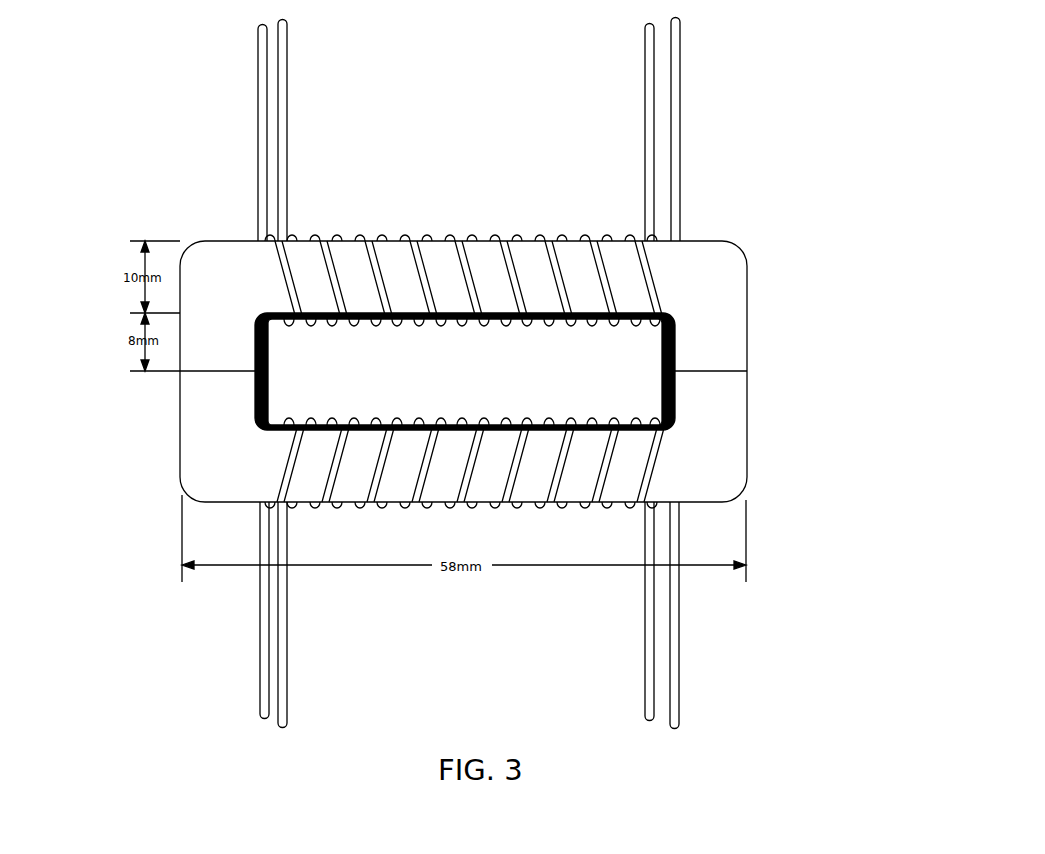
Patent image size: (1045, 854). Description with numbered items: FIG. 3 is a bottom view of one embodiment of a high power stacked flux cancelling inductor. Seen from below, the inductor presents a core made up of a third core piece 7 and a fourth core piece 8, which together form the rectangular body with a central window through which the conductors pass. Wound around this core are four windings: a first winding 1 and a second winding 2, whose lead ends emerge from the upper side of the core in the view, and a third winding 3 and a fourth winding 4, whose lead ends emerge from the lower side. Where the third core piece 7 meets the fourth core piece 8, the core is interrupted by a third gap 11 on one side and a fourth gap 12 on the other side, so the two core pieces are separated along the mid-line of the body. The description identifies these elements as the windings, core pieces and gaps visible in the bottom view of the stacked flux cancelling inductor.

The first winding 1 is at (257, 192).
The second winding 2 is at (290, 177).
The third winding 3 is at (258, 672).
The fourth winding 4 is at (293, 643).
The third core piece 7 is at (748, 308).
The fourth core piece 8 is at (750, 430).
The third gap 11 is at (168, 372).
The fourth gap 12 is at (758, 372).